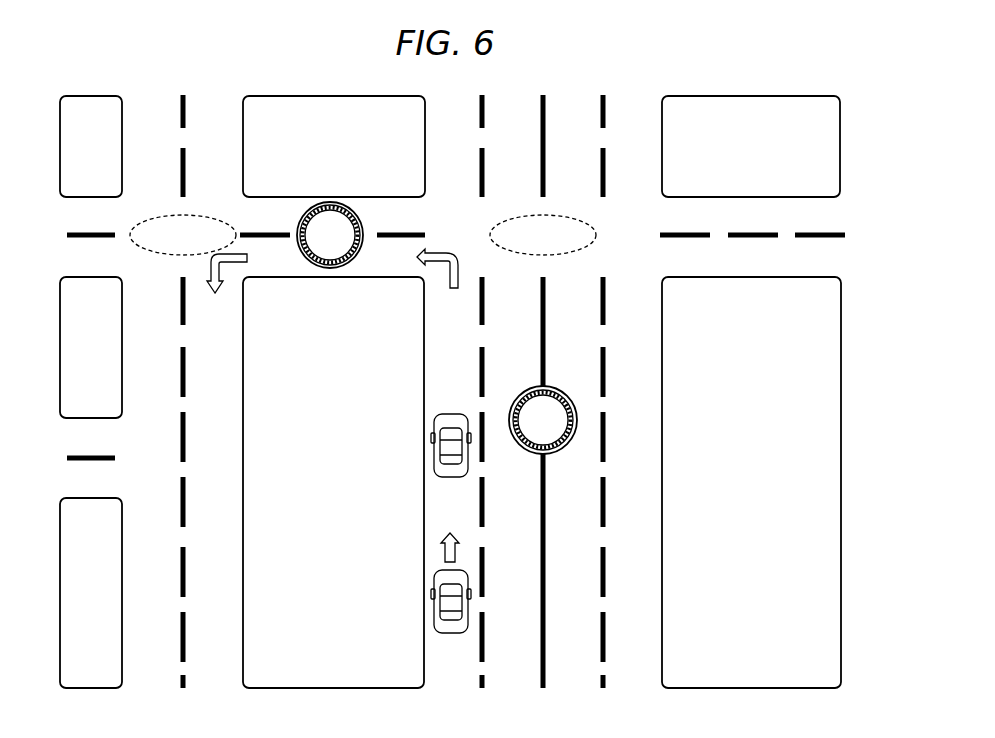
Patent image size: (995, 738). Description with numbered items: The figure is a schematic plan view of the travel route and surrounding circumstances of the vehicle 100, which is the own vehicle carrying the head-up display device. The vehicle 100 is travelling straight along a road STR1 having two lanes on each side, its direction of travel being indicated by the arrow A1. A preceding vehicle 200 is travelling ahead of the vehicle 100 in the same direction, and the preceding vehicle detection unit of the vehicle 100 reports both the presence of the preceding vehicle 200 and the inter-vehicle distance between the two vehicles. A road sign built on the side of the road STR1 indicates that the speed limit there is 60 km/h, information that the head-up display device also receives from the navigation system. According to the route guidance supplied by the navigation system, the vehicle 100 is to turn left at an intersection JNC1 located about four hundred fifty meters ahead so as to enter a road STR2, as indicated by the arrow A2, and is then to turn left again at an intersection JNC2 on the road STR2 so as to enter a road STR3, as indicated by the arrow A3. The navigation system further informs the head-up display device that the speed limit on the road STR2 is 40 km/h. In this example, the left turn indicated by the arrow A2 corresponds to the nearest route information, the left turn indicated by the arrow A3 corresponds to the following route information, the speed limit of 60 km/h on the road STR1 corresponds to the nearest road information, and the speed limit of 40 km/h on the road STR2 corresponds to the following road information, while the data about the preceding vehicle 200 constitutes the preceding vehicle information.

The vehicle 100 is at (448, 608).
The preceding vehicle 200 is at (450, 450).
The speed limit 40 is at (330, 235).
The speed limit 60 is at (543, 420).
The arrow A1 is at (448, 550).
The arrow A2 is at (437, 262).
The arrow A3 is at (232, 258).
The road STR1 is at (518, 507).
The road STR2 is at (388, 250).
The road STR3 is at (206, 375).
The intersection JNC1 is at (543, 235).
The intersection JNC2 is at (183, 235).